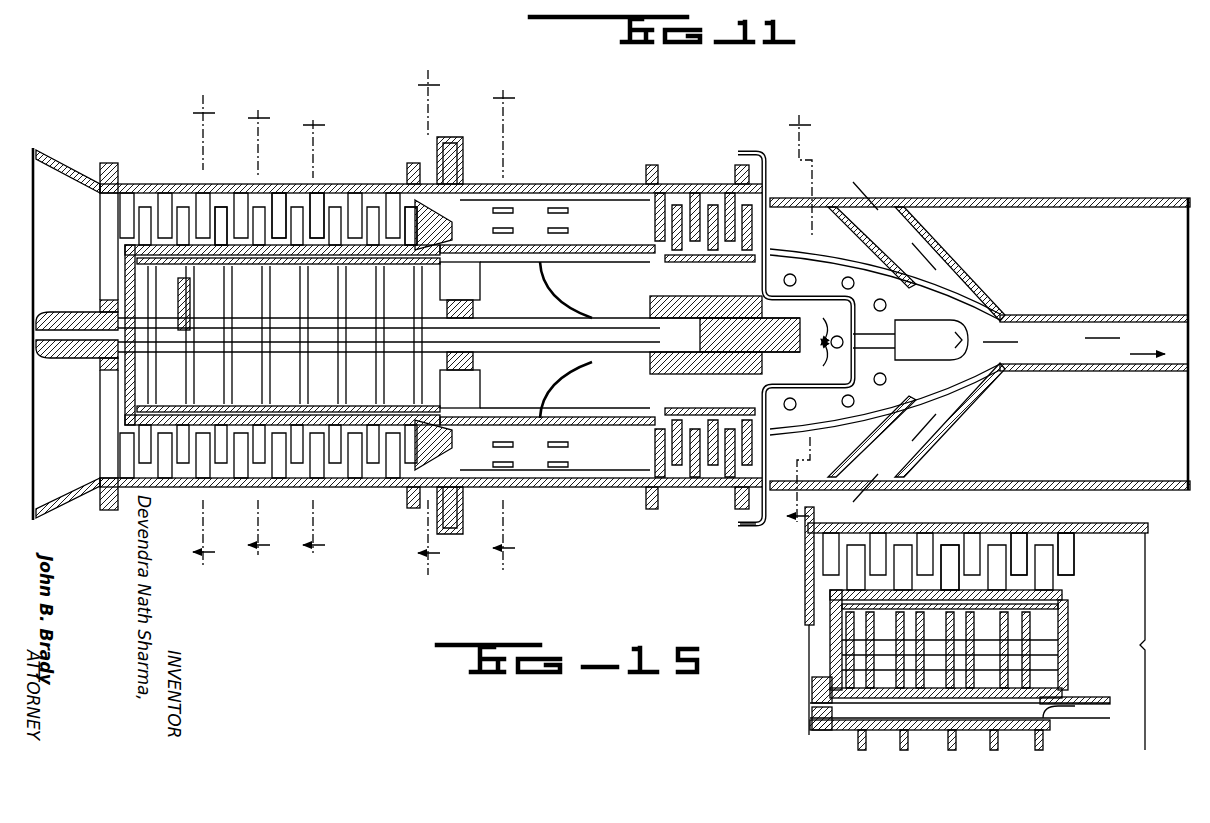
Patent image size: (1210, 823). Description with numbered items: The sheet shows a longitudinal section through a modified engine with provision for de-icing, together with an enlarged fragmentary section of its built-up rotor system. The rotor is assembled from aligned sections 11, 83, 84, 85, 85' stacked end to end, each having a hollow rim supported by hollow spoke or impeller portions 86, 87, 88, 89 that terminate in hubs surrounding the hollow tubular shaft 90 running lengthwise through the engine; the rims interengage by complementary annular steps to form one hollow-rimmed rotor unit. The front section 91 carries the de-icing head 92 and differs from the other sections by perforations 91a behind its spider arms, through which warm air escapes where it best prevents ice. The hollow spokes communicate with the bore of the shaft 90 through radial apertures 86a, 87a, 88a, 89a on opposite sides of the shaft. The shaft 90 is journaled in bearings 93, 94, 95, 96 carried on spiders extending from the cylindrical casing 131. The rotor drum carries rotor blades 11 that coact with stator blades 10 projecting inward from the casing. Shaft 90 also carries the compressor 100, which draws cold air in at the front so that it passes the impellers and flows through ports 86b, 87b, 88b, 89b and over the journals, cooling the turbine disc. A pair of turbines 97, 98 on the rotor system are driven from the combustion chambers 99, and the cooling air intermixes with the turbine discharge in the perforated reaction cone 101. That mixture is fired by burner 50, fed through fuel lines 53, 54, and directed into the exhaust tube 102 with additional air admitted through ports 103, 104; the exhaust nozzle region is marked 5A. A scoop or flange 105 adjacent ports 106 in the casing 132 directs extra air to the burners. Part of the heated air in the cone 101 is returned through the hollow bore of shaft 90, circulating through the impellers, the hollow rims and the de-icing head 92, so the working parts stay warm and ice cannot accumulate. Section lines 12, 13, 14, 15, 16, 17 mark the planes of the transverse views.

In FIG. 11, the stator blades 10 is at (396, 200).
In FIG. 19, the stator blades 10 is at (931, 534).
In FIG. 11, the rotor blades 11 is at (182, 208).
In FIG. 19, the rotor blades 11 is at (903, 546).
In FIG. 11, the section line 12 is at (204, 331).
In FIG. 11, the section line 13 is at (259, 331).
In FIG. 11, the section line 14 is at (314, 333).
In FIG. 11, the section line 15 is at (426, 320).
In FIG. 11, the section line 16 is at (503, 326).
In FIG. 11, the section line 17 is at (797, 318).
In FIG. 11, the rotor section 83 is at (220, 207).
In FIG. 19, the rotor section 83 is at (958, 548).
In FIG. 11, the rotor section 84 is at (277, 205).
In FIG. 19, the rotor section 84 is at (1000, 590).
In FIG. 11, the rotor section 85 is at (329, 189).
In FIG. 19, the rotor section 85 is at (1071, 545).
In FIG. 11, the rotor section 85' is at (452, 246).
In FIG. 19, the hollow spoke or impeller portion 86 is at (850, 660).
In FIG. 19, the radial aperture 86a is at (866, 740).
In FIG. 19, the port 86b is at (812, 689).
In FIG. 19, the hollow spoke or impeller portion 87 is at (900, 648).
In FIG. 19, the radial aperture 87a is at (908, 740).
In FIG. 19, the port 87b is at (1000, 656).
In FIG. 19, the hollow spoke or impeller portion 88 is at (1030, 626).
In FIG. 19, the radial aperture 88a is at (956, 740).
In FIG. 19, the port 88b is at (1062, 681).
In FIG. 19, the hollow spoke or impeller portion 89 is at (1050, 646).
In FIG. 19, the radial aperture 89a is at (1076, 722).
In FIG. 19, the port 89b is at (1112, 703).
In FIG. 11, the hollow tubular shaft 90 is at (98, 368).
In FIG. 19, the hollow tubular shaft 90 is at (1143, 745).
In FIG. 11, the front section 91 is at (125, 292).
In FIG. 19, the front section 91 is at (830, 618).
In FIG. 11, the perforations 91a is at (147, 277).
In FIG. 19, the perforations 91a is at (845, 625).
In FIG. 11, the de-icing head 92 is at (67, 357).
In FIG. 11, the bearing 93 is at (99, 318).
In FIG. 11, the bearing 94 is at (433, 318).
In FIG. 11, the bearing 95 is at (565, 335).
In FIG. 11, the bearing 96 is at (801, 305).
In FIG. 11, the turbine 97 is at (688, 196).
In FIG. 11, the turbine 98 is at (722, 210).
In FIG. 11, the combustion chambers 99 is at (583, 200).
In FIG. 11, the compressor 100 is at (548, 310).
In FIG. 11, the reaction cone 101 is at (866, 420).
In FIG. 11, the exhaust tube 102 is at (1070, 330).
In FIG. 11, the port 103 is at (925, 200).
In FIG. 11, the port 104 is at (930, 457).
In FIG. 11, the scoop or flange 105 is at (452, 137).
In FIG. 11, the ports 106 is at (408, 172).
In FIG. 11, the casing 131 is at (540, 426).
In FIG. 11, the casing 132 is at (526, 190).
In FIG. 11, the burner 50 is at (950, 330).
In FIG. 11, the fuel line 53 is at (746, 152).
In FIG. 11, the fuel line 54 is at (742, 525).
In FIG. 11, the exhaust nozzle 5A is at (1122, 197).